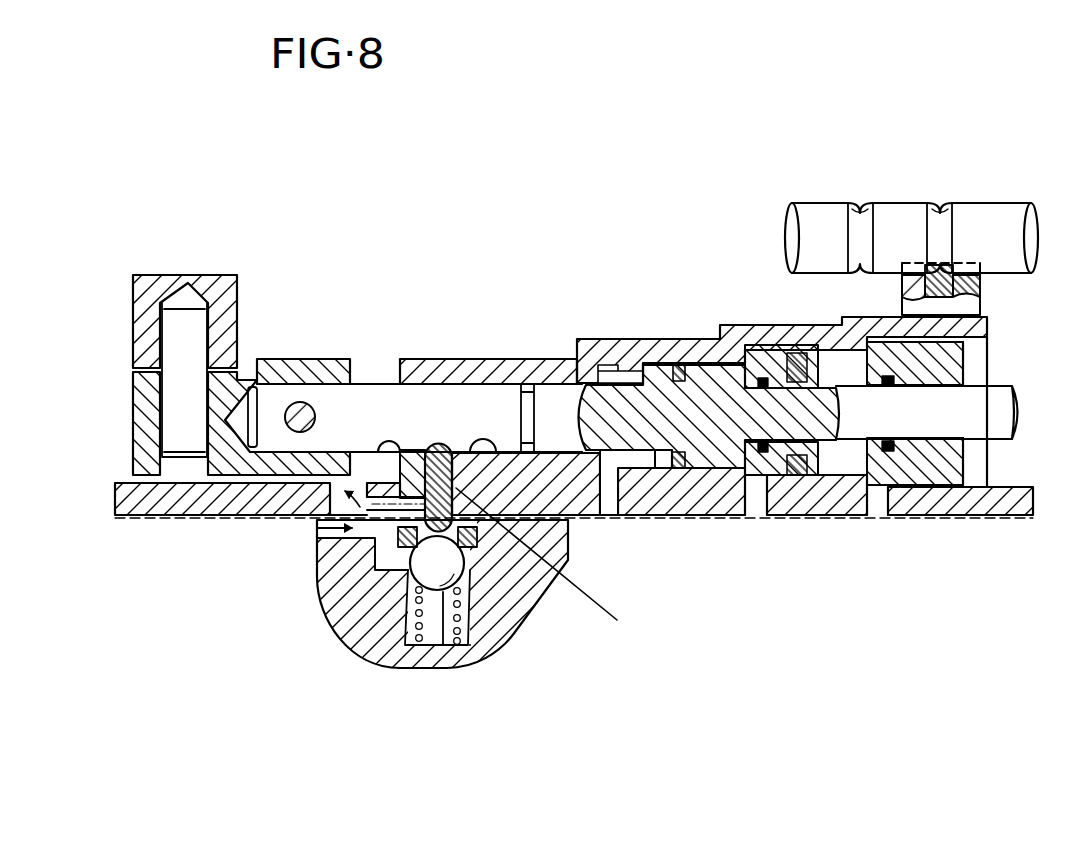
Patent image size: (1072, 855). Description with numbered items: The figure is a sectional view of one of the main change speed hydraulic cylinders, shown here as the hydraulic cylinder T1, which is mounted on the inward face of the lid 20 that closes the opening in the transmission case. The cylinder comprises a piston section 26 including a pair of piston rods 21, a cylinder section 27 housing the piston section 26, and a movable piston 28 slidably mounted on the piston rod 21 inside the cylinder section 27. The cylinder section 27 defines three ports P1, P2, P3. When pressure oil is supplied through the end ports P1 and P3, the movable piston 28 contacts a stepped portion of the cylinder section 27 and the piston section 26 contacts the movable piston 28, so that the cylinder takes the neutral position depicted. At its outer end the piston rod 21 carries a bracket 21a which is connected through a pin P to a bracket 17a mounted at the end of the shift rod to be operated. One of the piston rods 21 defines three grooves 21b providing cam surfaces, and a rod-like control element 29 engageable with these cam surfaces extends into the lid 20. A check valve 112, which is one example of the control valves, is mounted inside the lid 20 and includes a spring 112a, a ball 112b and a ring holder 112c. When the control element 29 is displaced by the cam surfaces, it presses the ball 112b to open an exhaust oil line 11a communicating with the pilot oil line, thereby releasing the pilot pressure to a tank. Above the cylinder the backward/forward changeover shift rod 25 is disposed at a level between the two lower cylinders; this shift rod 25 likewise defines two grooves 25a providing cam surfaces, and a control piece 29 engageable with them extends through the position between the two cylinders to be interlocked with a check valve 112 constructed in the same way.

The bracket 17a is at (237, 275).
The pin P is at (170, 335).
The bracket 21a is at (243, 378).
The piston rod 21 is at (552, 394).
The groove 21b is at (484, 440).
The piston section 26 is at (693, 357).
The cylinder section 27 is at (607, 378).
The movable piston 28 is at (770, 353).
The control element 29 is at (980, 292).
The backward/forward changeover shift rod 25 is at (812, 210).
The groove 25a is at (940, 214).
The hydraulic cylinder T1 is at (560, 297).
The exhaust oil line 11a is at (308, 528).
The lid 20 is at (513, 643).
The check valve 112 is at (352, 632).
The spring 112a is at (406, 650).
The ball 112b is at (443, 648).
The ring holder 112c is at (408, 585).
The port P1 is at (613, 520).
The port P2 is at (756, 520).
The port P3 is at (880, 520).